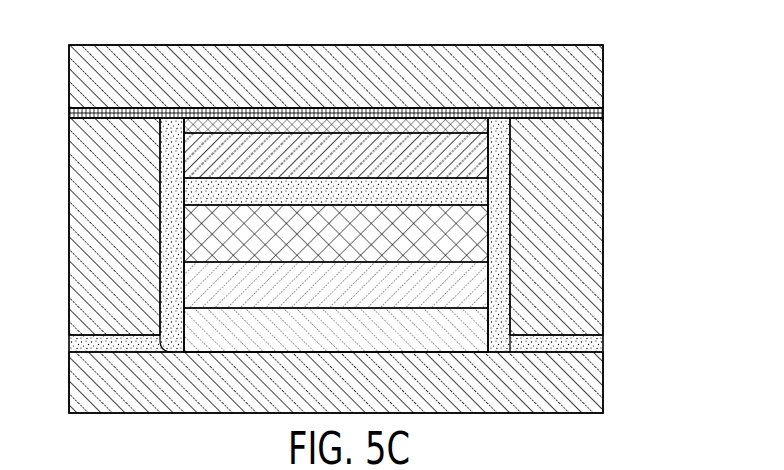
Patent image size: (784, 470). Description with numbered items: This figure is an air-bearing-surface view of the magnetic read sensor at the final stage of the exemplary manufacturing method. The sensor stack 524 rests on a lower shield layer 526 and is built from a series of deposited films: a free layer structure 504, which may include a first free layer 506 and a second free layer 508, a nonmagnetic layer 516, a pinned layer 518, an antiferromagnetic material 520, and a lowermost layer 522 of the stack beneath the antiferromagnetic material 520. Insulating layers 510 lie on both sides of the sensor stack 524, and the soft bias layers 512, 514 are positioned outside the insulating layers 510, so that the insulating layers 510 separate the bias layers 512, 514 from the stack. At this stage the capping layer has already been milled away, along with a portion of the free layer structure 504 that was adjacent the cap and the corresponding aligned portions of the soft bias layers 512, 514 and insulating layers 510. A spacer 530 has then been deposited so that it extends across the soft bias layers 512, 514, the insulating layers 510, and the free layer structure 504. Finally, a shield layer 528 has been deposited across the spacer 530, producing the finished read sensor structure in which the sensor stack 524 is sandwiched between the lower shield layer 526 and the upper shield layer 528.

The free layer structure 504 is at (513, 150).
The first free layer 506 is at (467, 127).
The second free layer 508 is at (212, 135).
The insulating layers 510 is at (80, 343).
The soft bias layer 512 is at (583, 198).
The soft bias layer 514 is at (80, 193).
The nonmagnetic layer 516 is at (470, 193).
The pinned layer 518 is at (465, 250).
The antiferromagnetic material 520 is at (465, 290).
The bottom electrode layer 522 is at (463, 335).
The sensor stack 524 is at (160, 237).
The shield layer 526 is at (585, 390).
The shield layer 528 is at (432, 57).
The spacer 530 is at (593, 113).